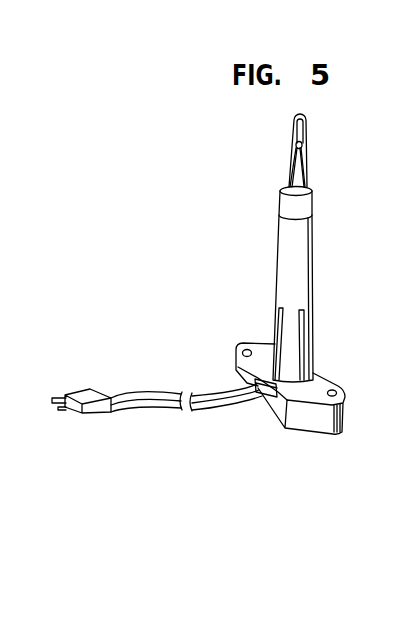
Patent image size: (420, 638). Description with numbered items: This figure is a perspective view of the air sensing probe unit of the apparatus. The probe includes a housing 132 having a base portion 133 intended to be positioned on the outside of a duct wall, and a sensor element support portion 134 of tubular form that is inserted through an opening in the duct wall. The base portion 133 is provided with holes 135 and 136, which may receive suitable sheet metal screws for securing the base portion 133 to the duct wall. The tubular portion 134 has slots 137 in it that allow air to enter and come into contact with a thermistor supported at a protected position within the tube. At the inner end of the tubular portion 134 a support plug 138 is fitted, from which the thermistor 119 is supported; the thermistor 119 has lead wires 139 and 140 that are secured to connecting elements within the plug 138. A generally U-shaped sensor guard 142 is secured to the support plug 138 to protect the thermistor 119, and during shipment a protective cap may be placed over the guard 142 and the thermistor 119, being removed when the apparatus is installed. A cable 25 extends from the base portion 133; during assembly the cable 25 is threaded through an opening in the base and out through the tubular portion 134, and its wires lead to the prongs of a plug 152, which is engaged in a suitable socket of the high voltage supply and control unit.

The sensor guard 142 is at (308, 127).
The thermistor 119 is at (302, 145).
The lead wire 140 is at (305, 164).
The lead wire 139 is at (288, 175).
The support plug 138 is at (308, 202).
The sensor element support portion 134 is at (311, 335).
The slots 137 is at (299, 310).
The hole 135 is at (237, 366).
The base portion 133 is at (313, 420).
The hole 136 is at (344, 392).
The housing 132 is at (345, 438).
The plug 152 is at (78, 393).
The cable 25 is at (167, 407).